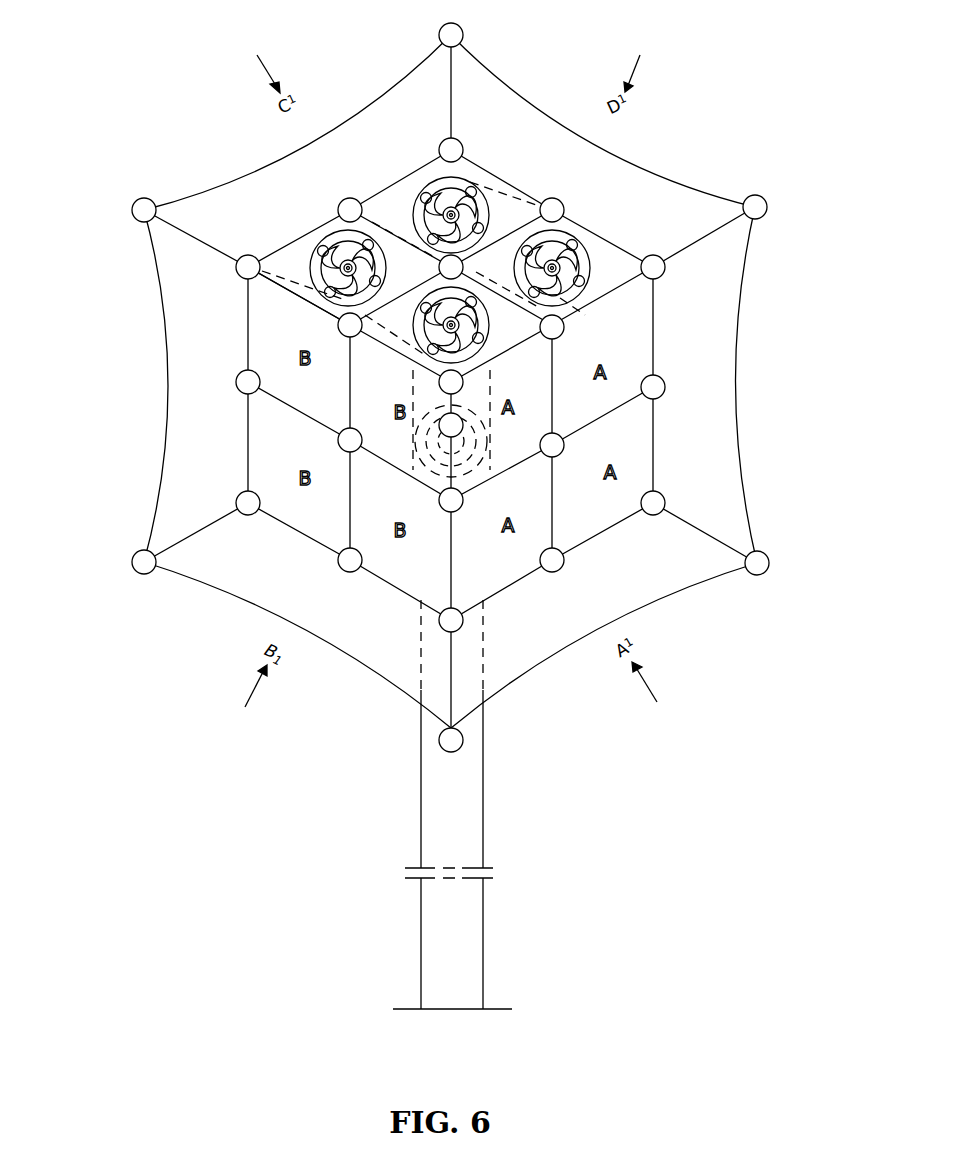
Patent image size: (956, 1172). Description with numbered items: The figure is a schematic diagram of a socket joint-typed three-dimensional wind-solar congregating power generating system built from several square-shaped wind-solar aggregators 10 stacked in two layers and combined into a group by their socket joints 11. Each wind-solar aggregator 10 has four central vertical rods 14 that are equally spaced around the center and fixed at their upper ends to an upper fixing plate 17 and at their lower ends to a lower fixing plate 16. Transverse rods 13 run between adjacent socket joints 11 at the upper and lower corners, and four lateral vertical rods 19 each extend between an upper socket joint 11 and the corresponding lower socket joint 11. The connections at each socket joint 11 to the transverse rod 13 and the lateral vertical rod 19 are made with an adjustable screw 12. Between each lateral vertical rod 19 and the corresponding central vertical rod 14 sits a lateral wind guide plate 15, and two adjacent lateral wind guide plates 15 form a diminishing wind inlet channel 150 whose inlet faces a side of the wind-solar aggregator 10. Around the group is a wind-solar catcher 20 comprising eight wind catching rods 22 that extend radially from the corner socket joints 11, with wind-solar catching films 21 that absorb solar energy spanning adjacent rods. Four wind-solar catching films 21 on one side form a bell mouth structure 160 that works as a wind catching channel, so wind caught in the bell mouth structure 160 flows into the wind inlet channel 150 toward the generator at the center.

The wind-solar aggregator 10 is at (576, 319).
The socket joint 11 is at (566, 325).
The adjustable screw 12 is at (597, 327).
The transverse rod 13 is at (601, 346).
The central vertical rod 14 is at (602, 360).
The lateral wind guide plate 15 is at (612, 376).
The lower fixing plate 16 is at (487, 462).
The upper fixing plate 17 is at (345, 303).
The lateral vertical rod 19 is at (553, 497).
The wind-solar catcher 20 is at (400, 381).
The wind-solar catching film 21 is at (167, 323).
The wind catching rod 22 is at (173, 223).
The diminishing wind inlet channel 150 is at (318, 402).
The bell mouth structure 160 is at (225, 555).